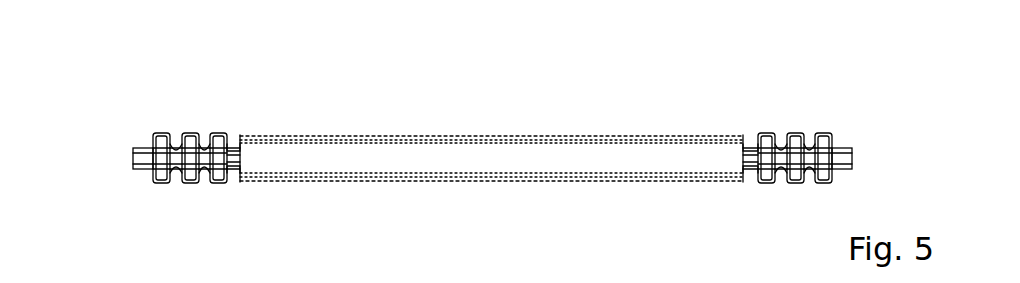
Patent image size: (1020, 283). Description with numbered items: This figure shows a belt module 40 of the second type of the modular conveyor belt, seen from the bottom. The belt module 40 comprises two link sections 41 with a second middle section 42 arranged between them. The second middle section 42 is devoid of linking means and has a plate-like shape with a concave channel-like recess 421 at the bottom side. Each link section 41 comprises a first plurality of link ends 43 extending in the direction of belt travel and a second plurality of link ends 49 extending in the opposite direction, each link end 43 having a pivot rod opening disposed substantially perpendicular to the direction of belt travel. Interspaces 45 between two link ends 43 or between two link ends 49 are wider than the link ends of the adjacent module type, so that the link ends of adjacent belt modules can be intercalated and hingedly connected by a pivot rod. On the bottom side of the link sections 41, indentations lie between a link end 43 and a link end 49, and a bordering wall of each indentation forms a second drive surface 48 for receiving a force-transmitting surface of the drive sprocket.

The belt module 40 is at (98, 130).
The link section 41 is at (190, 100).
The second middle section 42 is at (469, 106).
The concave channel-like recess 421 is at (552, 153).
The link end 43 is at (219, 133).
The interspace 45 is at (174, 176).
The second drive surface 48 is at (246, 158).
The link end 49 is at (215, 176).